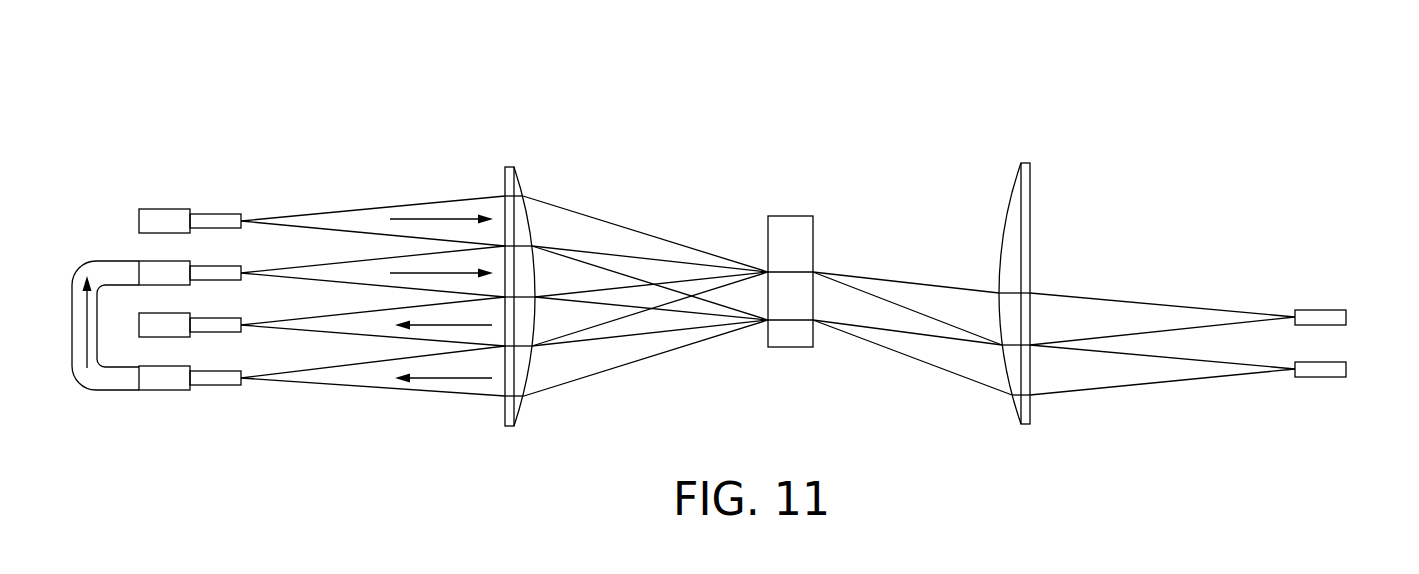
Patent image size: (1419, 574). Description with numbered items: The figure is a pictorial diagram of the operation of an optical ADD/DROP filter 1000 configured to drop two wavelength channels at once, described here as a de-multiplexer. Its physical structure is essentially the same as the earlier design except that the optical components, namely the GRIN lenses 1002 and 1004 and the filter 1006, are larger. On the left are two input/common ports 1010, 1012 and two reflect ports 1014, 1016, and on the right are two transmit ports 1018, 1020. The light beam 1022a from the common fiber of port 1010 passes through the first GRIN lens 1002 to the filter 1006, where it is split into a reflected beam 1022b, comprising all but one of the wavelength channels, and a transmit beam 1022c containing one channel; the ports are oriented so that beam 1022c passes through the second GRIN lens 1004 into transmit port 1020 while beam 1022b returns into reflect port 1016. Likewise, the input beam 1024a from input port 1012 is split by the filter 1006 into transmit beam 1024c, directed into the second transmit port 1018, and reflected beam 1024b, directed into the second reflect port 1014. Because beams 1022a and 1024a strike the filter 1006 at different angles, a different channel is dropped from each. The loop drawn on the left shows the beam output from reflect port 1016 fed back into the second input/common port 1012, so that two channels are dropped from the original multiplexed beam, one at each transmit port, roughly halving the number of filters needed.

The ADD/DROP filter 1000 is at (958, 62).
The GRIN lens 1002 is at (517, 176).
The GRIN lens 1004 is at (1013, 183).
The filter 1006 is at (791, 216).
The input/common port 1010 is at (162, 222).
The input/common port 1012 is at (153, 278).
The reflect port 1014 is at (160, 326).
The reflect port 1016 is at (155, 379).
The transmit port 1018 is at (1349, 316).
The transmit port 1020 is at (1351, 378).
The light beam 1022a is at (303, 213).
The reflected beam 1022b is at (355, 387).
The transmit beam 1022c is at (1185, 383).
The input beam 1024a is at (292, 266).
The reflected beam 1024b is at (303, 319).
The transmit beam 1024c is at (1146, 302).